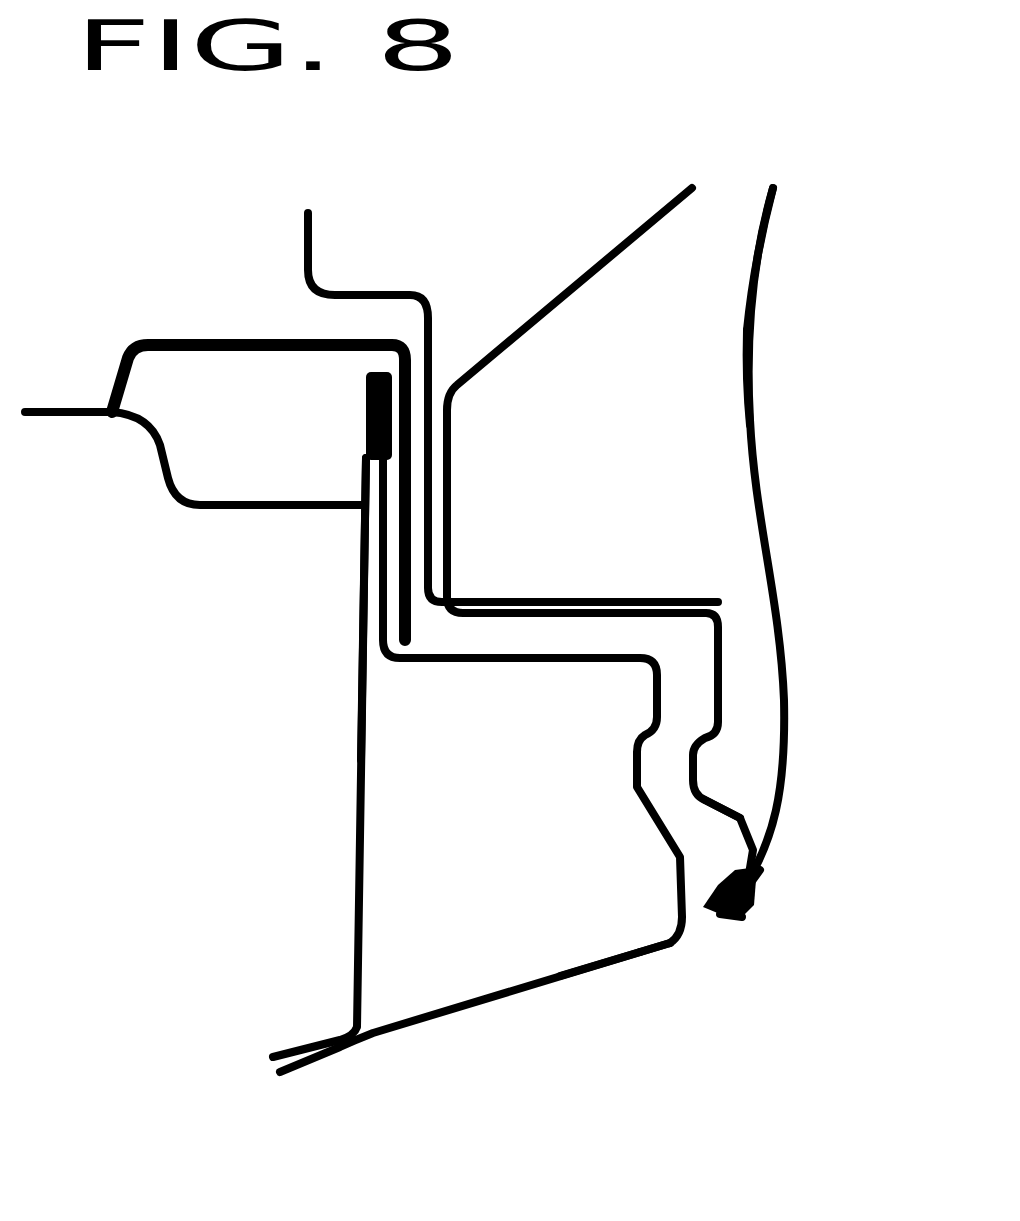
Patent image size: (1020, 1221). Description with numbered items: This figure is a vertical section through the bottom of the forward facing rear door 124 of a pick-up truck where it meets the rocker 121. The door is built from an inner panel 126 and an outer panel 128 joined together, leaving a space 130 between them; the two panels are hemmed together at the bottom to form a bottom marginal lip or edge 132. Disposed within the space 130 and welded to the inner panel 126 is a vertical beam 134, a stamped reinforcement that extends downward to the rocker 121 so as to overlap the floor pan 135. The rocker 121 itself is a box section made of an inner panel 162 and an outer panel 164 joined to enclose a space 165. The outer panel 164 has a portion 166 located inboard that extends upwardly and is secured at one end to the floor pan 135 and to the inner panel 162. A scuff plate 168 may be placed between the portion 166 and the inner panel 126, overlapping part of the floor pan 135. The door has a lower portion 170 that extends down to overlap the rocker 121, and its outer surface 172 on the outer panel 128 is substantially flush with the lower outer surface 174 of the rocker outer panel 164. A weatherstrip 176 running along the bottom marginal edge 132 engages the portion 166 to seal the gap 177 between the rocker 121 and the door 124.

The rocker 121 is at (493, 1012).
The forward facing rear door 124 is at (760, 488).
The inner panel 126 is at (428, 300).
The outer panel 128 is at (755, 378).
The space 130 is at (697, 288).
The bottom marginal lip or edge 132 is at (740, 907).
The vertical beam 134 is at (510, 345).
The floor pan 135 is at (258, 512).
The inner panel 162 is at (363, 872).
The outer panel 164 is at (600, 978).
The space 165 is at (400, 778).
The portion 166 is at (500, 664).
The scuff plate 168 is at (188, 340).
The lower portion 170 is at (735, 698).
The outer surface 172 is at (753, 890).
The lower outer surface 174 is at (650, 967).
The weatherstrip 176 is at (733, 914).
The gap 177 is at (703, 817).